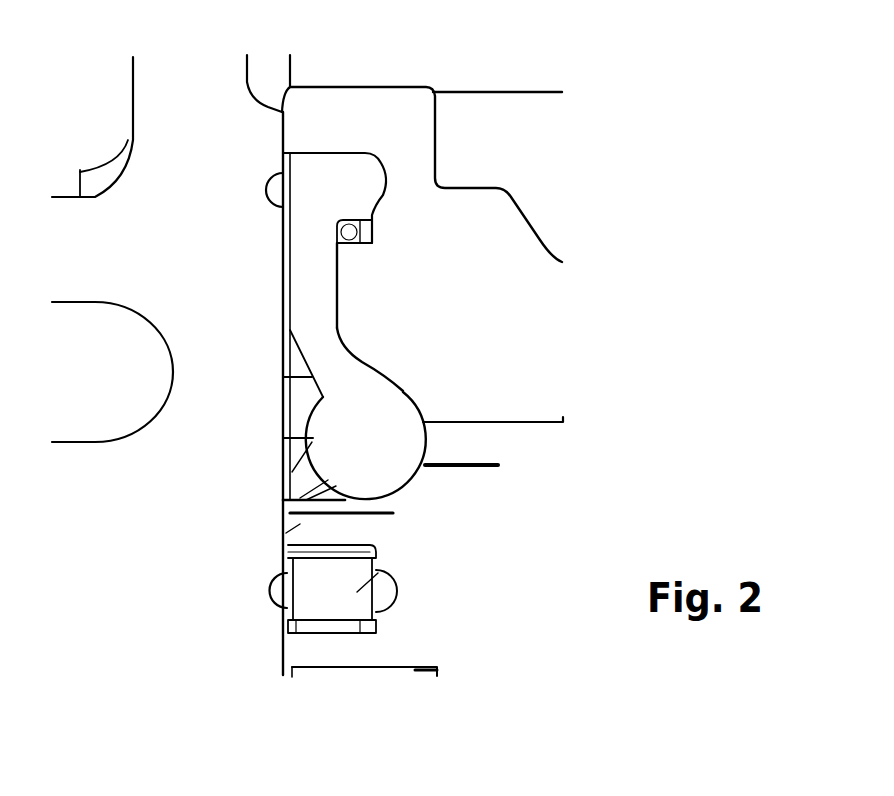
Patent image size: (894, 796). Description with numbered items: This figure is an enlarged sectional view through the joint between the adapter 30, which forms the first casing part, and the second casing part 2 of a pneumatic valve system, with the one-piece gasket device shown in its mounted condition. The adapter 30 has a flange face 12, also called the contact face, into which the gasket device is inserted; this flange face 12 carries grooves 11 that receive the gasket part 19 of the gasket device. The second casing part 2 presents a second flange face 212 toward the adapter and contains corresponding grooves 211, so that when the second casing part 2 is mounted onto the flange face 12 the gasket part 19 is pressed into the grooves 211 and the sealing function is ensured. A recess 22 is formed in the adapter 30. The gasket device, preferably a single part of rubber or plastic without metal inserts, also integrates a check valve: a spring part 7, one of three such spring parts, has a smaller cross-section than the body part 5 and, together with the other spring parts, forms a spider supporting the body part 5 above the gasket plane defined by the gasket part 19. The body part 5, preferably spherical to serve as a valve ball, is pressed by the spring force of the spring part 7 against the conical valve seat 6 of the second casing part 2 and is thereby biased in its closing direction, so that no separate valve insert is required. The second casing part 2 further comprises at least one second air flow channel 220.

The second casing part 2 is at (412, 108).
The body part 5 is at (398, 432).
The conical valve seat 6 is at (425, 477).
The spring part 7 is at (320, 303).
The grooves in the adapter 11 is at (274, 170).
The flange face of the adapter 12 is at (290, 532).
The gasket part 19 is at (356, 192).
The recess in the adapter 22 is at (345, 322).
The adapter 30 is at (208, 90).
The grooves in the second casing part 211 is at (373, 241).
The second flange face 212 is at (286, 642).
The second air flow channel 220 is at (483, 433).